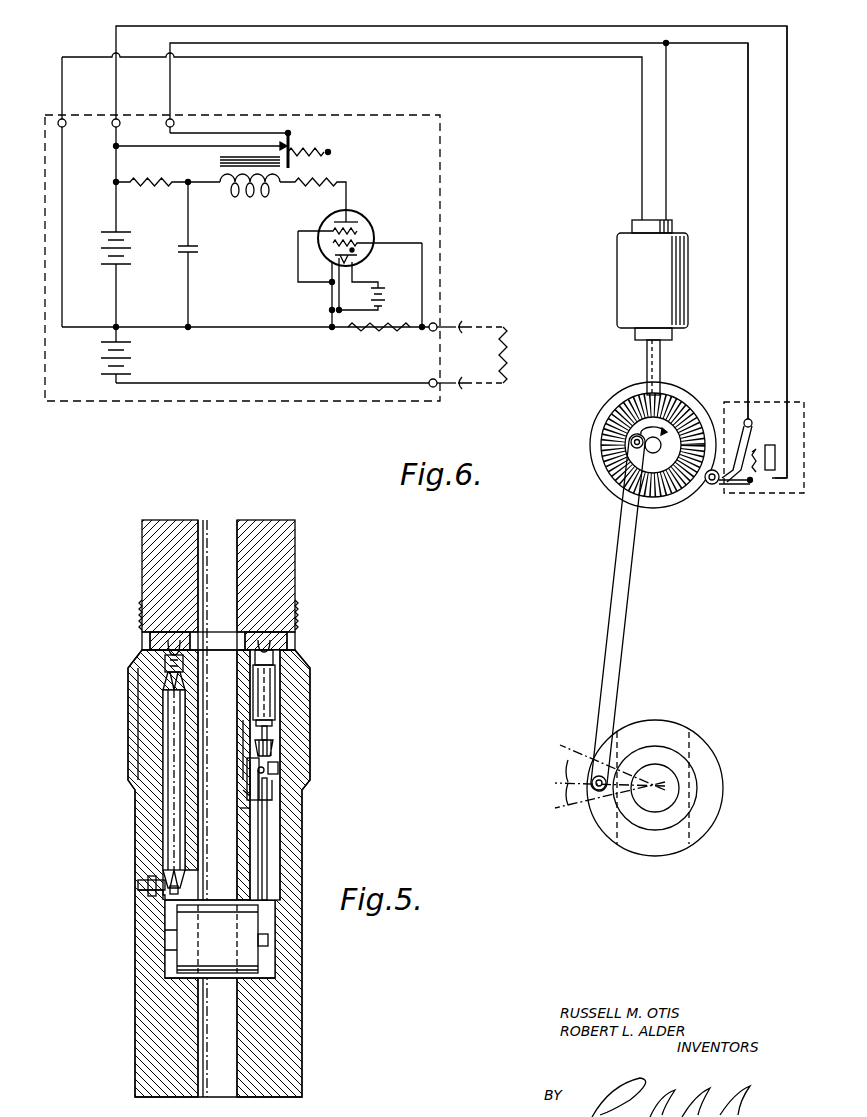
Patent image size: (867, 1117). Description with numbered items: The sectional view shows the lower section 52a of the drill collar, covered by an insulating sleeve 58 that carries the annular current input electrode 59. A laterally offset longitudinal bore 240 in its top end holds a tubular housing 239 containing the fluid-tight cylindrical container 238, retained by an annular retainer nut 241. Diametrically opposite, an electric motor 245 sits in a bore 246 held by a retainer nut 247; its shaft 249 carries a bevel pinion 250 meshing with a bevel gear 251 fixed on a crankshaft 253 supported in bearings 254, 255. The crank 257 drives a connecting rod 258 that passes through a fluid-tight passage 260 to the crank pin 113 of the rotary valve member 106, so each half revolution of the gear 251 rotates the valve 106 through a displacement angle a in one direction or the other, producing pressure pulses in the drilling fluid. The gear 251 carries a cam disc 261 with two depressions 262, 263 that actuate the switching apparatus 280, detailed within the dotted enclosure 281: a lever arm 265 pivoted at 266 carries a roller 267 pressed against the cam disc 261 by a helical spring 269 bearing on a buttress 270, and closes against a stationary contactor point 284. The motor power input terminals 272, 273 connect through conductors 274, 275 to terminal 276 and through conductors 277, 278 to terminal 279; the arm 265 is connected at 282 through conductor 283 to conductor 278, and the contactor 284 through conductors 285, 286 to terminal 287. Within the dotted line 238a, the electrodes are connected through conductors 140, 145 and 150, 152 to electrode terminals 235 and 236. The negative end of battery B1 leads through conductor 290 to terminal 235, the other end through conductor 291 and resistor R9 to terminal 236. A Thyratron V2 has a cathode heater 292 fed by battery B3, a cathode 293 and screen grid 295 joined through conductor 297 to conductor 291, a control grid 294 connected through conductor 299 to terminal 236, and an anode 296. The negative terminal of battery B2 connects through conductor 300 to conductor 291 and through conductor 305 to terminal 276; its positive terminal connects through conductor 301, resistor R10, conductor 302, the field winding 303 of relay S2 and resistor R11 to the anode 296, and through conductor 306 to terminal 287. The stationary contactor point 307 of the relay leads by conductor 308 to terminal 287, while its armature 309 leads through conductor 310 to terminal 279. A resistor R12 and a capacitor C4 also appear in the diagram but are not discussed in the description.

In FIG. 6, the dotted line enclosure 238a is at (440, 180).
In FIG. 6, the conductor 275 is at (380, 28).
In FIG. 6, the conductor 286 is at (460, 44).
In FIG. 6, the conductor 278 is at (500, 58).
In FIG. 6, the conductor 277 is at (667, 155).
In FIG. 6, the conductor 274 is at (641, 151).
In FIG. 6, the conductor 285 is at (787, 230).
In FIG. 6, the terminal 276 is at (66, 127).
In FIG. 6, the terminal 287 is at (119, 120).
In FIG. 6, the terminal 279 is at (173, 120).
In FIG. 6, the conductor 310 is at (218, 133).
In FIG. 6, the conductor 308 is at (176, 146).
In FIG. 6, the stationary contactor point 307 is at (288, 133).
In FIG. 6, the armature 309 is at (295, 141).
In FIG. 6, the resistor R10 is at (148, 181).
In FIG. 6, the conductor 306 is at (116, 162).
In FIG. 6, the conductor 301 is at (116, 196).
In FIG. 6, the conductor 302 is at (214, 181).
In FIG. 6, the field winding 303 is at (233, 194).
In FIG. 6, the electromagnetic relay S2 is at (250, 198).
In FIG. 6, the resistor R11 is at (312, 180).
In FIG. 6, the Thyratron V2 is at (370, 214).
In FIG. 6, the anode 296 is at (356, 221).
In FIG. 6, the screen grid 295 is at (328, 231).
In FIG. 6, the control grid 294 is at (360, 243).
In FIG. 6, the cathode 293 is at (335, 255).
In FIG. 6, the conductor 297 is at (332, 298).
In FIG. 6, the cathode heater 292 is at (352, 272).
In FIG. 6, the battery B3 is at (382, 302).
In FIG. 6, the conductor 299 is at (422, 258).
In FIG. 6, the conductor 291 is at (234, 326).
In FIG. 6, the resistor R9 is at (356, 330).
In FIG. 6, the electrode terminal 236 is at (436, 322).
In FIG. 6, the electrode terminal 235 is at (430, 380).
In FIG. 6, the conductor 290 is at (278, 382).
In FIG. 6, the conductor 152 is at (462, 323).
In FIG. 5, the conductor 152 is at (170, 882).
In FIG. 6, the conductor 145 is at (462, 386).
In FIG. 5, the conductor 145 is at (148, 896).
In FIG. 6, the resistor R12 is at (507, 350).
In FIG. 6, the battery B2 is at (136, 262).
In FIG. 6, the battery B1 is at (136, 354).
In FIG. 6, the conductor 305 is at (62, 288).
In FIG. 6, the conductor 300 is at (118, 303).
In FIG. 6, the capacitor C4 is at (193, 256).
In FIG. 6, the electrical power input terminal 272 is at (640, 220).
In FIG. 6, the electrical power input terminal 273 is at (670, 222).
In FIG. 6, the electric motor 245 is at (668, 270).
In FIG. 5, the electric motor 245 is at (272, 684).
In FIG. 6, the electrical conductor 283 is at (748, 284).
In FIG. 6, the shaft 249 is at (647, 359).
In FIG. 5, the shaft 249 is at (268, 730).
In FIG. 6, the depression 262 is at (604, 420).
In FIG. 6, the bevel pinion 250 is at (672, 396).
In FIG. 5, the bevel pinion 250 is at (274, 746).
In FIG. 6, the bevel gear 251 is at (686, 412).
In FIG. 5, the bevel gear 251 is at (259, 796).
In FIG. 6, the crank 257 is at (630, 443).
In FIG. 5, the crank 257 is at (265, 766).
In FIG. 6, the cam disc 261 is at (664, 505).
In FIG. 5, the cam disc 261 is at (240, 808).
In FIG. 6, the depression 263 is at (709, 500).
In FIG. 6, the connecting rod 258 is at (620, 607).
In FIG. 5, the connecting rod 258 is at (268, 838).
In FIG. 6, the dotted enclosure 281 is at (794, 402).
In FIG. 6, the electrical connection 282 is at (750, 418).
In FIG. 6, the pivot connection 266 is at (752, 421).
In FIG. 6, the lever arm 265 is at (748, 448).
In FIG. 6, the roller 267 is at (716, 486).
In FIG. 6, the stationary contactor point 284 is at (758, 488).
In FIG. 6, the helical spring 269 is at (762, 472).
In FIG. 6, the buttress 270 is at (780, 470).
In FIG. 6, the rotary valve member 106 is at (706, 812).
In FIG. 5, the rotary valve member 106 is at (190, 938).
In FIG. 6, the crank pin 113 is at (594, 790).
In FIG. 5, the crank pin 113 is at (268, 938).
In FIG. 6, the displacement angle a is at (606, 776).
In FIG. 5, the insulated electrical conductor 140 is at (135, 1000).
In FIG. 5, the insulating sleeve 58 is at (302, 1060).
In FIG. 5, the lower section of drill collar 52a is at (280, 1020).
In FIG. 5, the annular current input electrode 59 is at (128, 725).
In FIG. 5, the insulated electrical conductor 150 is at (135, 830).
In FIG. 5, the fluid-tight cylindrical container 238 is at (172, 792).
In FIG. 5, the tubular housing 239 is at (168, 748).
In FIG. 5, the longitudinal bore 240 is at (166, 676).
In FIG. 5, the annular retainer nut 241 is at (165, 660).
In FIG. 5, the annular retainer nut 247 is at (274, 658).
In FIG. 5, the bore 246 is at (272, 716).
In FIG. 5, the bearing 255 is at (278, 768).
In FIG. 5, the crankshaft 253 is at (272, 786).
In FIG. 5, the fluid-tight passage 260 is at (278, 865).
In FIG. 5, the switching apparatus 280 is at (243, 728).
In FIG. 5, the bearing 254 is at (243, 790).